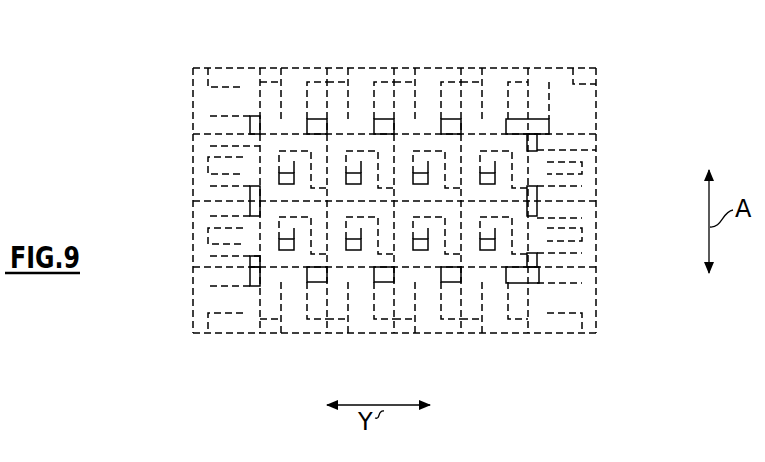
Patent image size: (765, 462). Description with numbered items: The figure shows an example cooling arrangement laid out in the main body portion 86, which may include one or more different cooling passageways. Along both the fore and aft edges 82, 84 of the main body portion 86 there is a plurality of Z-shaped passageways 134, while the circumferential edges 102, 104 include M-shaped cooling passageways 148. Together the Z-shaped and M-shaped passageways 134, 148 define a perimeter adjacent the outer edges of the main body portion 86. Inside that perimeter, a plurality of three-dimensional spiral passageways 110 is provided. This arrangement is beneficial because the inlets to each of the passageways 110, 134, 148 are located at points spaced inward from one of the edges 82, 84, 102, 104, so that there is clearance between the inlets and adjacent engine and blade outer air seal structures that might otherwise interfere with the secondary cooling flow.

The fore edge 82 is at (476, 339).
The aft edge 84 is at (420, 62).
The main body portion 86 is at (628, 138).
The circumferential edge 102 is at (598, 247).
The circumferential edge 104 is at (192, 215).
The three-dimensional spiral passageways 110 is at (481, 171).
The Z-shaped passageways 134 is at (300, 62).
The M-shaped cooling passageways 148 is at (192, 158).